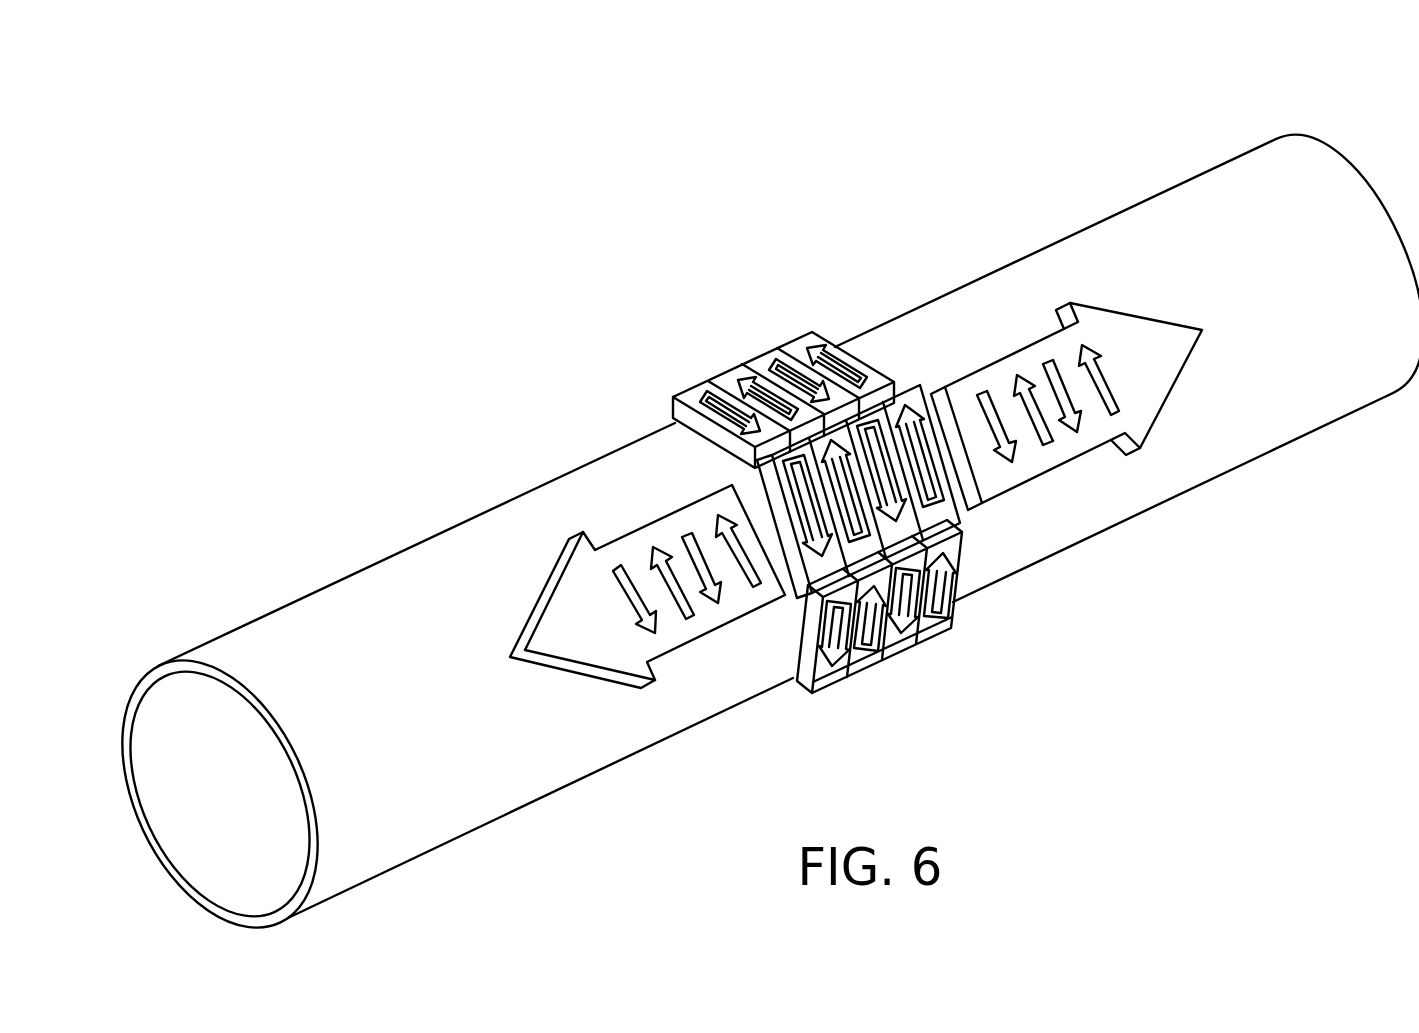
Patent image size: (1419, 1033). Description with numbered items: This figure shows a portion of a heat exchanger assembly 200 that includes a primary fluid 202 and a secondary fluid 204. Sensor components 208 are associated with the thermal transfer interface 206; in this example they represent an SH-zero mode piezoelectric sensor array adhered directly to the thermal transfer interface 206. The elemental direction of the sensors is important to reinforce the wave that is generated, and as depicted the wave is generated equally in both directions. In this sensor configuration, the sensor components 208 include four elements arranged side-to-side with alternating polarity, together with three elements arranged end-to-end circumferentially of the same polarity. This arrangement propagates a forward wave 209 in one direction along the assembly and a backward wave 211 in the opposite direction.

The heat exchanger assembly 200 is at (1090, 167).
The primary fluid 202 is at (212, 773).
The secondary fluid 204 is at (266, 581).
The thermal transfer interface 206 is at (585, 455).
The sensor components 208 is at (843, 370).
The forward wave 209 is at (1037, 457).
The backward wave 211 is at (672, 630).